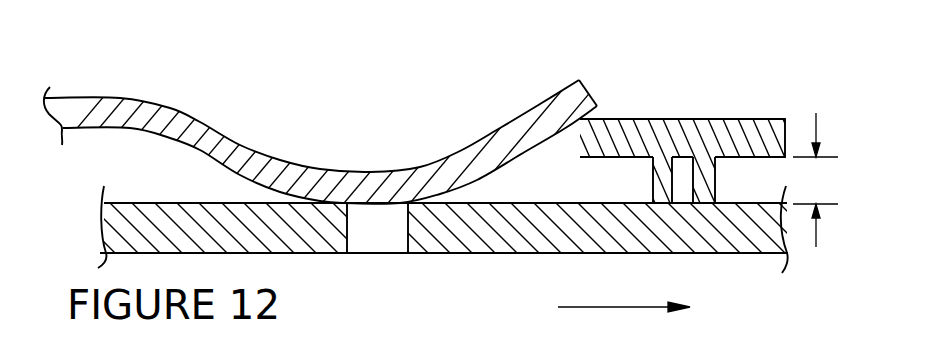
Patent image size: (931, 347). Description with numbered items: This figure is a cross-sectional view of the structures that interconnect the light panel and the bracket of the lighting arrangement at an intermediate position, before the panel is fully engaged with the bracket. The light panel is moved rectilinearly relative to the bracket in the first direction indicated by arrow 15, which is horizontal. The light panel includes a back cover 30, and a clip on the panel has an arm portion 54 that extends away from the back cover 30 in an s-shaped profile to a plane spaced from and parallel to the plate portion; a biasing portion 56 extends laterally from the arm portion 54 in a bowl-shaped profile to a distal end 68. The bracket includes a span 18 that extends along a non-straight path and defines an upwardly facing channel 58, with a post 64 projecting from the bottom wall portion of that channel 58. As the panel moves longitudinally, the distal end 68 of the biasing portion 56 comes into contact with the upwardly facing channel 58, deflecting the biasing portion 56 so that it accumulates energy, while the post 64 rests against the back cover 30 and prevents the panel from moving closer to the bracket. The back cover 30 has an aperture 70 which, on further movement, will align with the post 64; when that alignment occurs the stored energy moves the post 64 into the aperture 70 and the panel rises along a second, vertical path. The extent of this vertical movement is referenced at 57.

The arrow 15 is at (622, 307).
The span 18 is at (747, 119).
The back cover 30 is at (514, 254).
The arm portion 54 is at (87, 90).
The biasing portion 56 is at (260, 145).
The extent of vertical movement 57 is at (815, 169).
The upwardly facing channel 58 is at (653, 119).
The post 64 is at (714, 180).
The distal end 68 is at (573, 105).
The aperture 70 is at (347, 230).